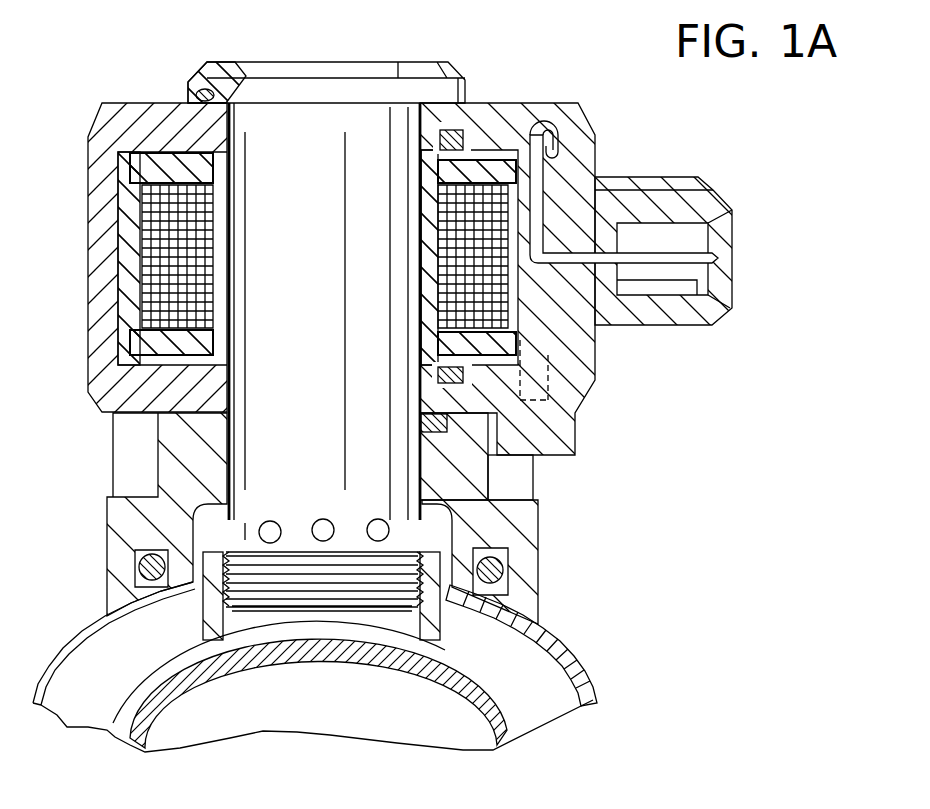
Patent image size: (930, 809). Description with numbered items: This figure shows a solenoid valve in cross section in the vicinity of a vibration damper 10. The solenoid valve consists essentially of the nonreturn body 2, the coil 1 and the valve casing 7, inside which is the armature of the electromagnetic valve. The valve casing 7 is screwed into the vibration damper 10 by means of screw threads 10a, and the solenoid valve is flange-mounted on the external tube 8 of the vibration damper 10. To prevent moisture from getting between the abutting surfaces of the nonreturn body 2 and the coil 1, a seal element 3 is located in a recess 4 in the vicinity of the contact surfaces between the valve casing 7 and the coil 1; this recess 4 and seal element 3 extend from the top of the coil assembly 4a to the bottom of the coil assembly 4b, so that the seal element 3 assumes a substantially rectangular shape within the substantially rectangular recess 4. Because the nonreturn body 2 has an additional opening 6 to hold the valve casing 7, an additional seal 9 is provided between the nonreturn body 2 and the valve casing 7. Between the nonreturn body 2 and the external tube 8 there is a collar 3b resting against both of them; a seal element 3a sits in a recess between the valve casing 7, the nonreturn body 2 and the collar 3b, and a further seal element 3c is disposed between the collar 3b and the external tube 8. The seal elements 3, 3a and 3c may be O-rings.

The coil 1 is at (148, 260).
The nonreturn body 2 is at (132, 130).
The seal element 3 is at (575, 455).
The seal element 3a is at (440, 425).
The collar 3b is at (542, 532).
The seal element 3c is at (510, 577).
The recess 4 is at (470, 143).
The coil assembly top 4a is at (425, 152).
The coil assembly bottom 4b is at (440, 367).
The additional opening 6 is at (462, 132).
The valve casing 7 is at (362, 127).
The external tube 8 is at (545, 642).
The additional seal 9 is at (197, 81).
The vibration damper 10 is at (537, 707).
The screw threads 10a is at (195, 588).